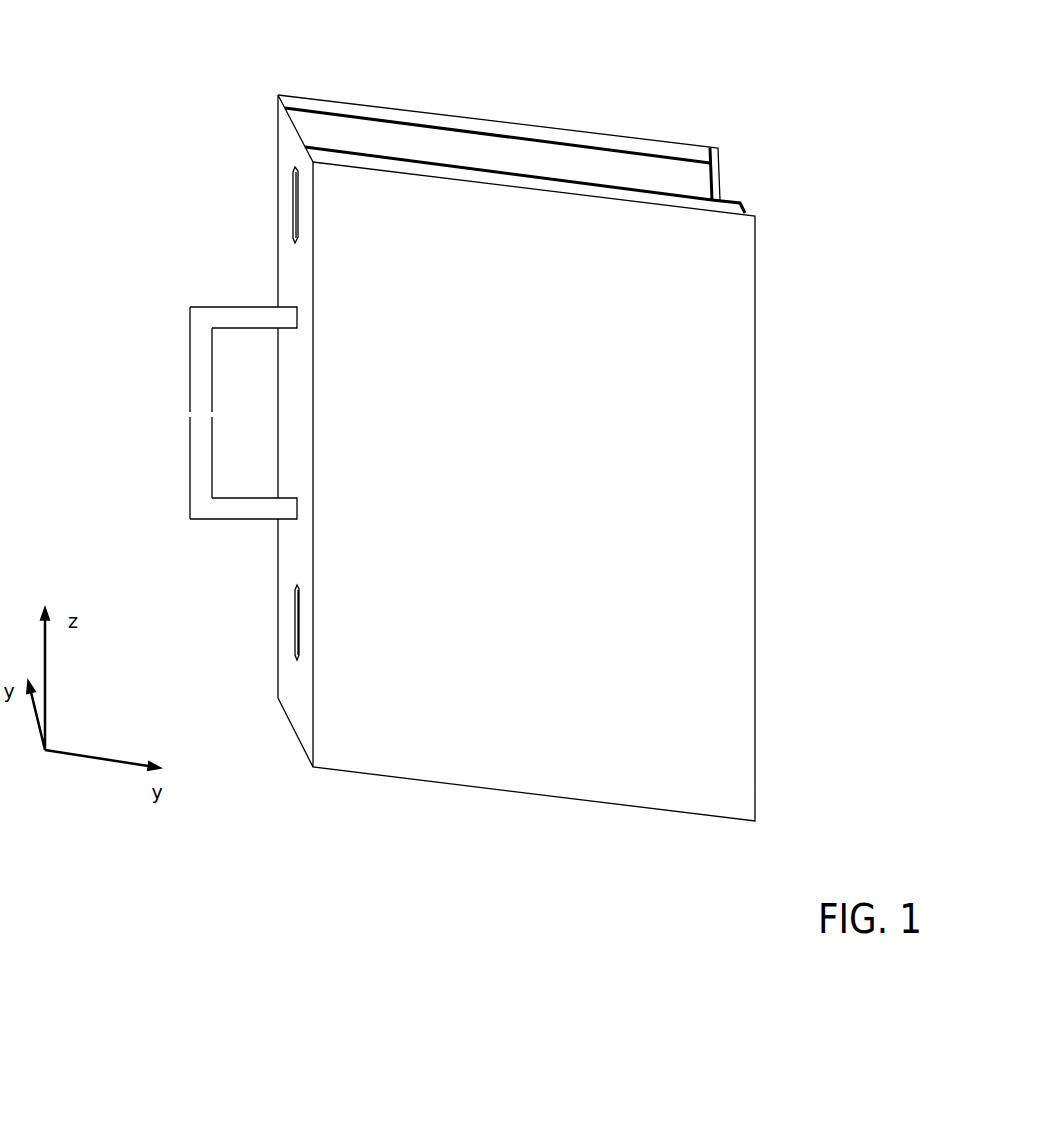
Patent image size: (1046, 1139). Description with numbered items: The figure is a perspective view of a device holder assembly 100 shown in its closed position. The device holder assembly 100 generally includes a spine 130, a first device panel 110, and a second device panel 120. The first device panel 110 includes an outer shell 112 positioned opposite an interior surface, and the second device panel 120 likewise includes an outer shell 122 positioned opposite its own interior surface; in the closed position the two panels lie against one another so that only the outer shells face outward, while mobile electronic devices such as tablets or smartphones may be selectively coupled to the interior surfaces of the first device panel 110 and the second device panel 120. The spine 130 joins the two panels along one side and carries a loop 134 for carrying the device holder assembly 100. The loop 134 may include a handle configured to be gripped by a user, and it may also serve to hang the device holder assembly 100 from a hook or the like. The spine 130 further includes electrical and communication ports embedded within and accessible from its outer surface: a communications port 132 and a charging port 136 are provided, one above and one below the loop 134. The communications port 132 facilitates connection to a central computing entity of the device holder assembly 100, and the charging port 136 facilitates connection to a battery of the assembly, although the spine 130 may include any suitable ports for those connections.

The device holder assembly 100 is at (430, 489).
The first device panel 110 is at (534, 533).
The outer shell 112 is at (570, 705).
The second device panel 120 is at (511, 110).
The outer shell 122 is at (347, 102).
The spine 130 is at (209, 431).
The communications port 132 is at (281, 195).
The loop 134 is at (203, 383).
The charging port 136 is at (283, 613).